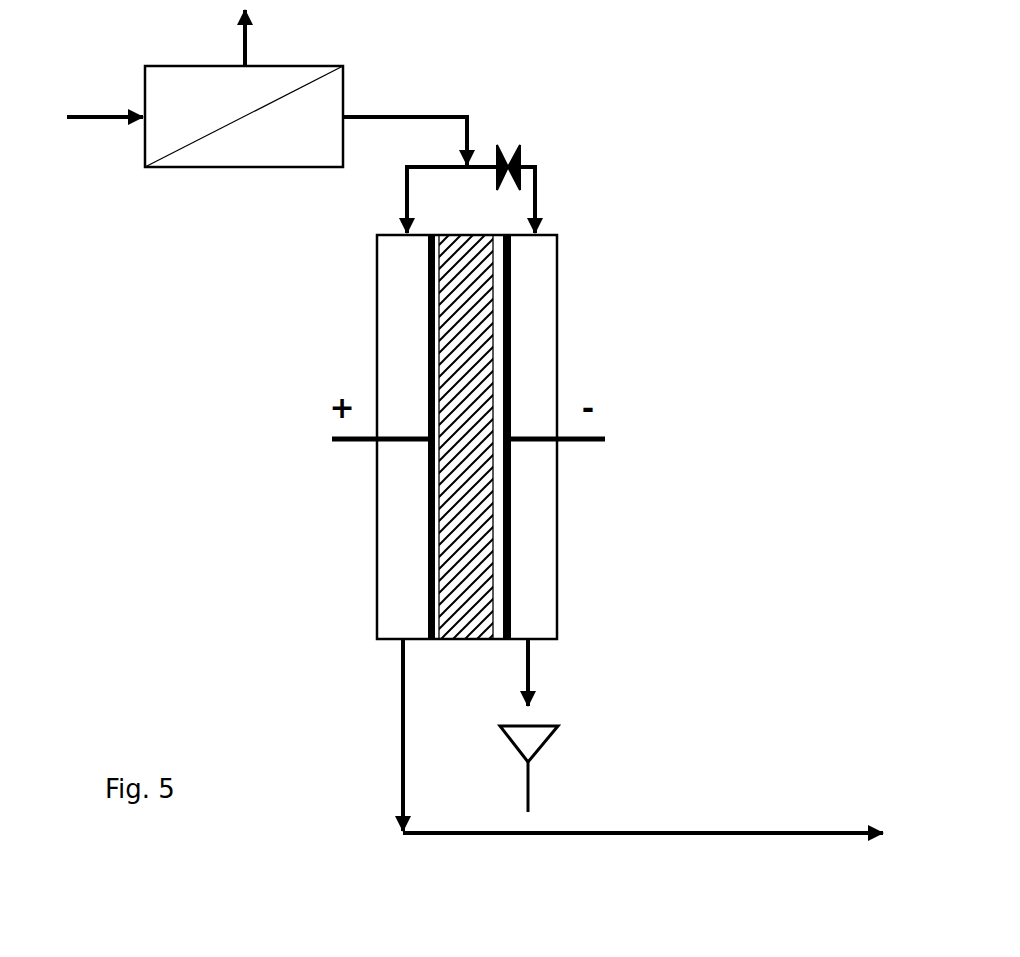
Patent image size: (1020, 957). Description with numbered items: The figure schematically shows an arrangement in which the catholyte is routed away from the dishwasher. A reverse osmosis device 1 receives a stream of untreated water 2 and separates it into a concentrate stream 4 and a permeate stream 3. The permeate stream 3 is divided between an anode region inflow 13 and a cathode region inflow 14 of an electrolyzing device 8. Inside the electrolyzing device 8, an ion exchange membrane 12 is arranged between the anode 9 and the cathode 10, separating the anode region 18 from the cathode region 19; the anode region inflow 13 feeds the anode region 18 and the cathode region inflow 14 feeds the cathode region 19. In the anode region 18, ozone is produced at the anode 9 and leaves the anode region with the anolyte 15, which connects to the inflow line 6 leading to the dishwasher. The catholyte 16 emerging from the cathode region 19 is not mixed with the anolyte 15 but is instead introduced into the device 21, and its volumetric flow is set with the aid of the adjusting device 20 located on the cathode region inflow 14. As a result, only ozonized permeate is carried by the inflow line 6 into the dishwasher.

The reverse osmosis device 1 is at (134, 65).
The stream of untreated water 2 is at (92, 130).
The permeate stream 3 is at (385, 112).
The concentrate stream 4 is at (258, 26).
The inflow line 6 is at (666, 825).
The electrolyzing device 8 is at (375, 293).
The anode 9 is at (427, 408).
The cathode 10 is at (512, 405).
The ion exchange membrane 12 is at (484, 290).
The anode region inflow 13 is at (402, 202).
The cathode region inflow 14 is at (540, 198).
The anolyte 15 is at (400, 677).
The catholyte 16 is at (536, 675).
The anode region 18 is at (398, 527).
The cathode region 19 is at (532, 543).
The adjusting device 20 is at (516, 150).
The device 21 is at (535, 762).